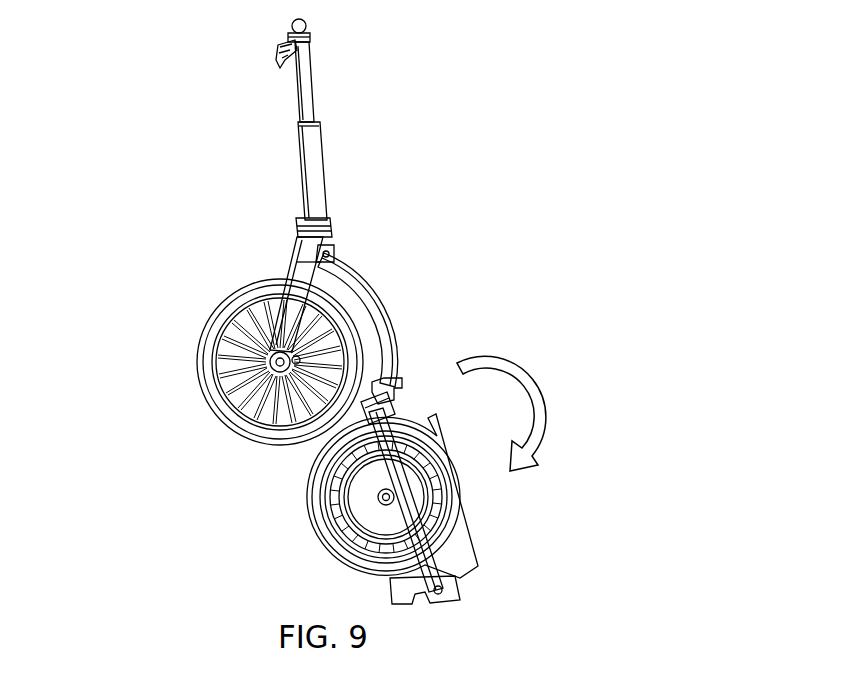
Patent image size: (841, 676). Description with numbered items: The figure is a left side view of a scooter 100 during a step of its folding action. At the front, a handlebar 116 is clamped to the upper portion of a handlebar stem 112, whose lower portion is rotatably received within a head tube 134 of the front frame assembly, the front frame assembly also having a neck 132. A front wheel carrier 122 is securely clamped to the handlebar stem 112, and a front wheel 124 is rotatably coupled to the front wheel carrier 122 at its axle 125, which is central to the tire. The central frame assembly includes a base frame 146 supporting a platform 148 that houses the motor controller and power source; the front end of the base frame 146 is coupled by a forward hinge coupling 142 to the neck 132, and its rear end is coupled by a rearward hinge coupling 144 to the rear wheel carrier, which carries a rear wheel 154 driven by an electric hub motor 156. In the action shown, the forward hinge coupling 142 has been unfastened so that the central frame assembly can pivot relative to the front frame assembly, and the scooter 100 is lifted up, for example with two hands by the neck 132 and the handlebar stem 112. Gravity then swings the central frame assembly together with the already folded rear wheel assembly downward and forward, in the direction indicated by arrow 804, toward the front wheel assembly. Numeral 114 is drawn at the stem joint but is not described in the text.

The scooter 100 is at (207, 105).
The handlebar stem 112 is at (323, 193).
The column joint collar 114 is at (298, 222).
The handlebar 116 is at (290, 58).
The front wheel carrier 122 is at (290, 300).
The front wheel 124 is at (193, 358).
The axle 125 is at (272, 359).
The neck 132 is at (385, 309).
The head tube 134 is at (323, 253).
The forward hinge coupling 142 is at (380, 396).
The rearward hinge coupling 144 is at (440, 590).
The base frame 146 is at (383, 444).
The platform 148 is at (470, 528).
The rear wheel 154 is at (340, 563).
The electric hub motor 156 is at (420, 517).
The arrow 804 is at (545, 391).